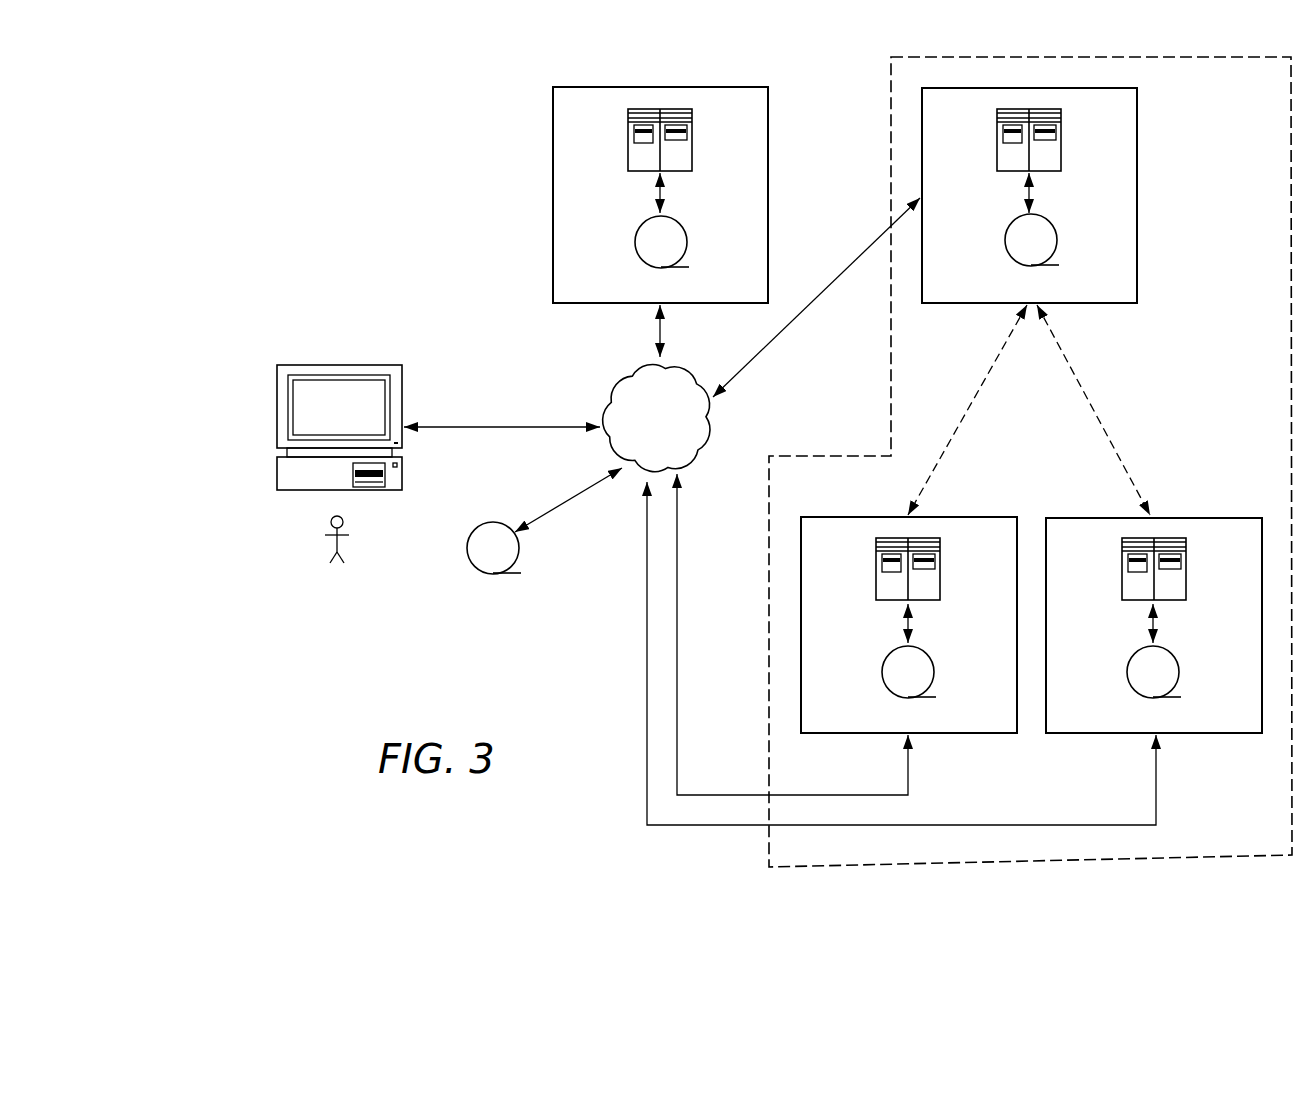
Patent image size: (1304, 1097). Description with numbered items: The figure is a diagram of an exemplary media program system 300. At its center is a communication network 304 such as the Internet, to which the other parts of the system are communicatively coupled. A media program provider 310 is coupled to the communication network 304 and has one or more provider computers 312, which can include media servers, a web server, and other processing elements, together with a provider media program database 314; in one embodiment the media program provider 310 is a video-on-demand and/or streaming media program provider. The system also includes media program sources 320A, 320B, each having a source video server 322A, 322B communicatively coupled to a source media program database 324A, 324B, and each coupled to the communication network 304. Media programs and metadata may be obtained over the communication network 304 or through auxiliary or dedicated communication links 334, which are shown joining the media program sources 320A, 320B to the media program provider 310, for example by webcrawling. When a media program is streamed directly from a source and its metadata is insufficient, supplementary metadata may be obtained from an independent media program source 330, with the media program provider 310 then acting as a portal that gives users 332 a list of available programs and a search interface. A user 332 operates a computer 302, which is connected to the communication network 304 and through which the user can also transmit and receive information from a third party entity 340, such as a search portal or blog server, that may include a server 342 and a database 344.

The media program system 300 is at (932, 57).
The user's computer 302 is at (410, 412).
The communication network 304 is at (721, 452).
The media program provider 310 is at (1137, 240).
The provider computers 312 is at (1060, 122).
The provider media program database 314 is at (1057, 243).
The media program source 320A is at (955, 517).
The media program source 320B is at (1200, 518).
The source video server 322A is at (939, 562).
The source media program database 324A is at (934, 675).
The source video server 322B is at (1184, 562).
The source media program database 324B is at (1180, 675).
The independent media program source 330 is at (480, 576).
The user 332 is at (337, 567).
The auxiliary communication links 334 is at (975, 397).
The third party entity 340 is at (553, 224).
The server 342 is at (692, 133).
The database 344 is at (687, 246).